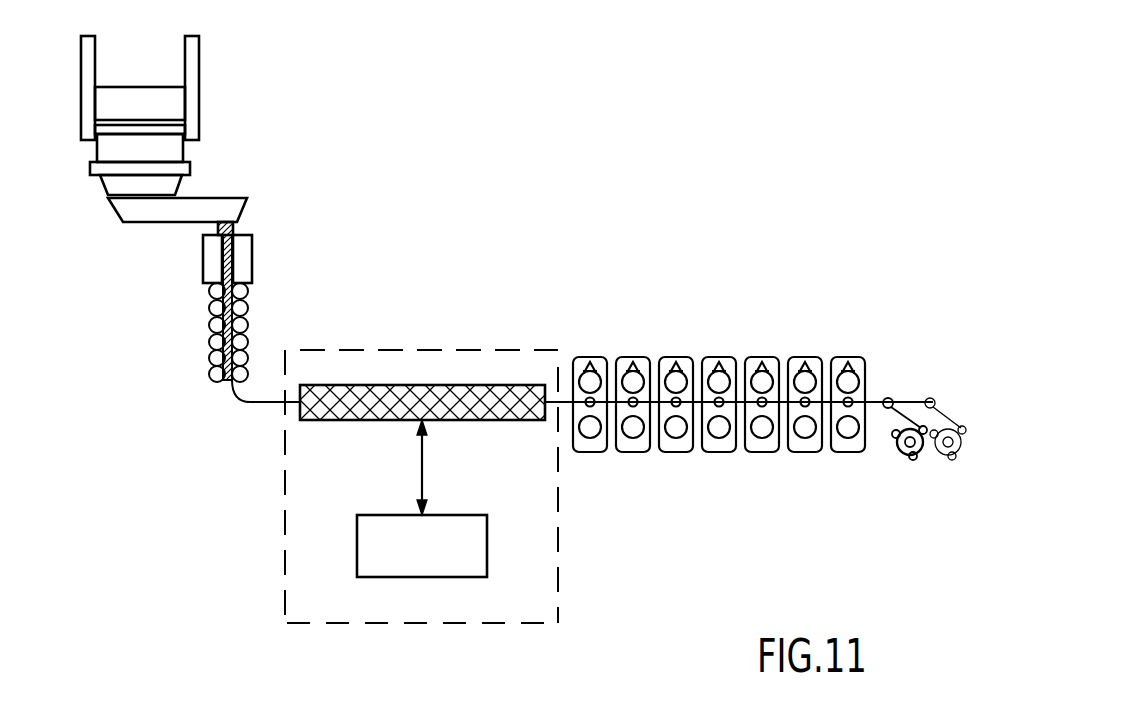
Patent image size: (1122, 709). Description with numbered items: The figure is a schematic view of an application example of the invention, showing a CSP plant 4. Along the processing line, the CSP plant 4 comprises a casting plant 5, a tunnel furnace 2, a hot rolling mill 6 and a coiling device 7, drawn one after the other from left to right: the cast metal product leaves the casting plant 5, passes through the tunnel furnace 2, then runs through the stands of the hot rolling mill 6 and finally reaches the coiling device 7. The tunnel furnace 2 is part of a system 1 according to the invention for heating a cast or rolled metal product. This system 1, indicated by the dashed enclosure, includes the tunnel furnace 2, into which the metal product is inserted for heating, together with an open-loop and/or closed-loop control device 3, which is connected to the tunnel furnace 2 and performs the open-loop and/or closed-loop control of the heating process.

The system 1 is at (420, 352).
The tunnel furnace 2 is at (520, 385).
The open-loop and/or closed-loop control device 3 is at (467, 542).
The CSP plant 4 is at (392, 190).
The casting plant 5 is at (222, 80).
The hot rolling mill 6 is at (862, 463).
The coiling device 7 is at (968, 463).